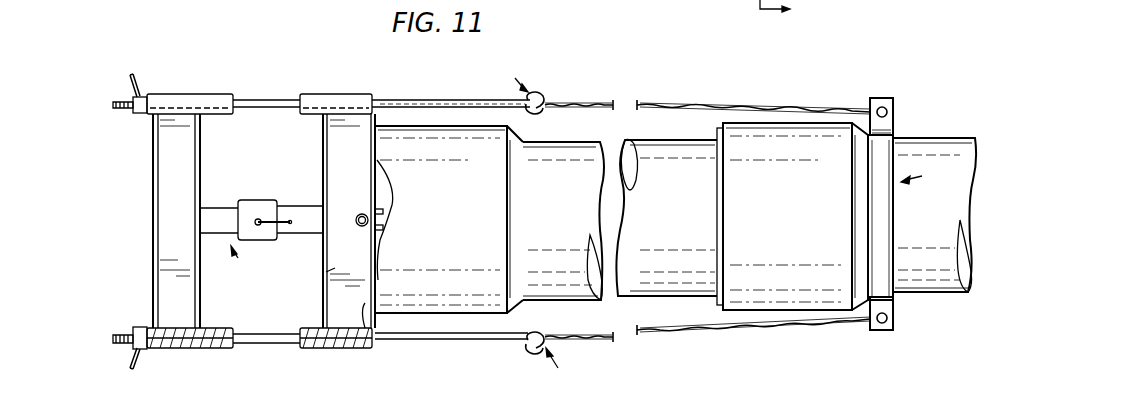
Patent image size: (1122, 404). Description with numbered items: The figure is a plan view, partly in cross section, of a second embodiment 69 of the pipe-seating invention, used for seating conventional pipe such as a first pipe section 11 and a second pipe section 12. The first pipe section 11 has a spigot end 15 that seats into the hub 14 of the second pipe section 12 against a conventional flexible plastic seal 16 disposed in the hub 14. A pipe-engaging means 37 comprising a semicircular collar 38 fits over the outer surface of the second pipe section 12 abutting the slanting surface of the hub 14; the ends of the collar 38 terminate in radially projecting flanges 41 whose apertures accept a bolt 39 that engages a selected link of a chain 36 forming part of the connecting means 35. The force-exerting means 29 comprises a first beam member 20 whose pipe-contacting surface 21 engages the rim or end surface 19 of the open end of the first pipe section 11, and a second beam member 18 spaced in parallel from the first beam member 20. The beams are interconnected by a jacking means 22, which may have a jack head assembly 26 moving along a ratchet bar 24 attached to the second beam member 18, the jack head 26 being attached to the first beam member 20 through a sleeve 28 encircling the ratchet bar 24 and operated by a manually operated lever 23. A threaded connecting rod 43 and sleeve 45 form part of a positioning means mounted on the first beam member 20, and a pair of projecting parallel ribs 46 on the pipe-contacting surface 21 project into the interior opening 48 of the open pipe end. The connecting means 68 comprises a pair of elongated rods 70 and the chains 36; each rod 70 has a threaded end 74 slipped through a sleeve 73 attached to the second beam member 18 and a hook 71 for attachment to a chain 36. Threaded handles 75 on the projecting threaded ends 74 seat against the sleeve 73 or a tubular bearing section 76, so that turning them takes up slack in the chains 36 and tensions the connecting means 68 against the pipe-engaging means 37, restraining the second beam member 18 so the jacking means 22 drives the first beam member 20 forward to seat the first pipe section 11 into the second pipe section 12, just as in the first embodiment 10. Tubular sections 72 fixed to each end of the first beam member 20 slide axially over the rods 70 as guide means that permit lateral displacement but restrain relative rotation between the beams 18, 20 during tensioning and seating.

The pipe-seating apparatus 10 is at (790, 13).
The first pipe section 11 is at (590, 140).
The second pipe section 12 is at (958, 130).
The hub 14 is at (450, 104).
The spigot end 15 is at (655, 138).
The flexible plastic seal 16 is at (718, 132).
The second beam member 18 is at (170, 165).
The rim or end surface of the open pipe end 19 is at (370, 345).
The first beam member 20 is at (307, 316).
The pipe-contacting surface 21 is at (386, 180).
The jacking means 22 is at (221, 273).
The manually operated lever or bar 23 is at (270, 235).
The ratchet bar 24 is at (216, 206).
The jack head assembly 26 is at (253, 200).
The sleeve 28 is at (298, 206).
The force-exerting means 29 is at (270, 352).
The connecting means 35 is at (515, 78).
The chain 36 is at (708, 98).
The pipe-engaging means 37 is at (928, 179).
The collar 38 is at (884, 214).
The bolt 39 is at (885, 108).
The flanges 41 is at (890, 118).
The connecting rod or bolt 43 is at (360, 214).
The sleeve 45 is at (385, 228).
The projecting parallel ribs 46 is at (385, 212).
The interior opening 48 is at (330, 270).
The connecting means 68 is at (563, 371).
The second embodiment of the pipe-seating invention 69 is at (292, 78).
The elongated rods 70 is at (392, 98).
The hook 71 is at (548, 88).
The tubular sections 72 is at (342, 74).
The sleeve 73 is at (173, 96).
The threaded end 74 is at (116, 104).
The threaded handles 75 is at (133, 74).
The tubular bearing section 76 is at (145, 95).